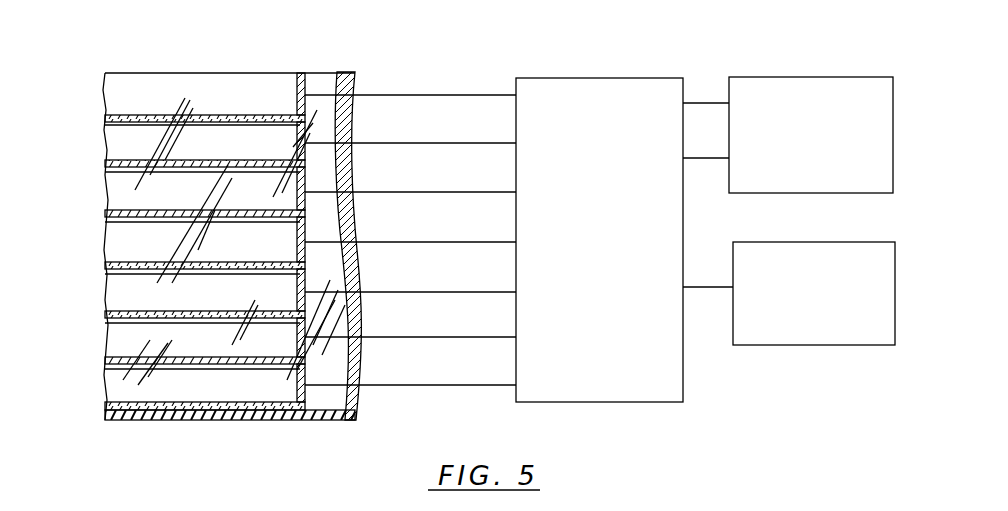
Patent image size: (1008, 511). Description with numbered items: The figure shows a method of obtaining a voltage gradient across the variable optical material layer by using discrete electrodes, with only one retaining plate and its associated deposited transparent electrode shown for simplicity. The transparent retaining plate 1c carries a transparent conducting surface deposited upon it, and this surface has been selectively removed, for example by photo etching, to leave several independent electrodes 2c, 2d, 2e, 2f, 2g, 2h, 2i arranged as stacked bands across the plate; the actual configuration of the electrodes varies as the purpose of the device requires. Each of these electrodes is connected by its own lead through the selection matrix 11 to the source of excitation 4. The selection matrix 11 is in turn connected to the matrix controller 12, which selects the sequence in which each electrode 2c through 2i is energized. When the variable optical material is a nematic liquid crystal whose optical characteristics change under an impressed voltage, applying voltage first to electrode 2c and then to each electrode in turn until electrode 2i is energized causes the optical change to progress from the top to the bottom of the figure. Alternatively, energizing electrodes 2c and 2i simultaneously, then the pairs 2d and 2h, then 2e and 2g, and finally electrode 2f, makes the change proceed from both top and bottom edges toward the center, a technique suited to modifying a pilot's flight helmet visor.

The electrode 2c is at (108, 93).
The electrode 2d is at (108, 140).
The electrode 2e is at (108, 187).
The electrode 2f is at (108, 239).
The electrode 2g is at (108, 290).
The electrode 2h is at (108, 336).
The electrode 2i is at (108, 384).
The transparent retaining plate 1c is at (342, 76).
The selection matrix 11 is at (633, 93).
The source of excitation 4 is at (830, 85).
The matrix controller 12 is at (828, 337).